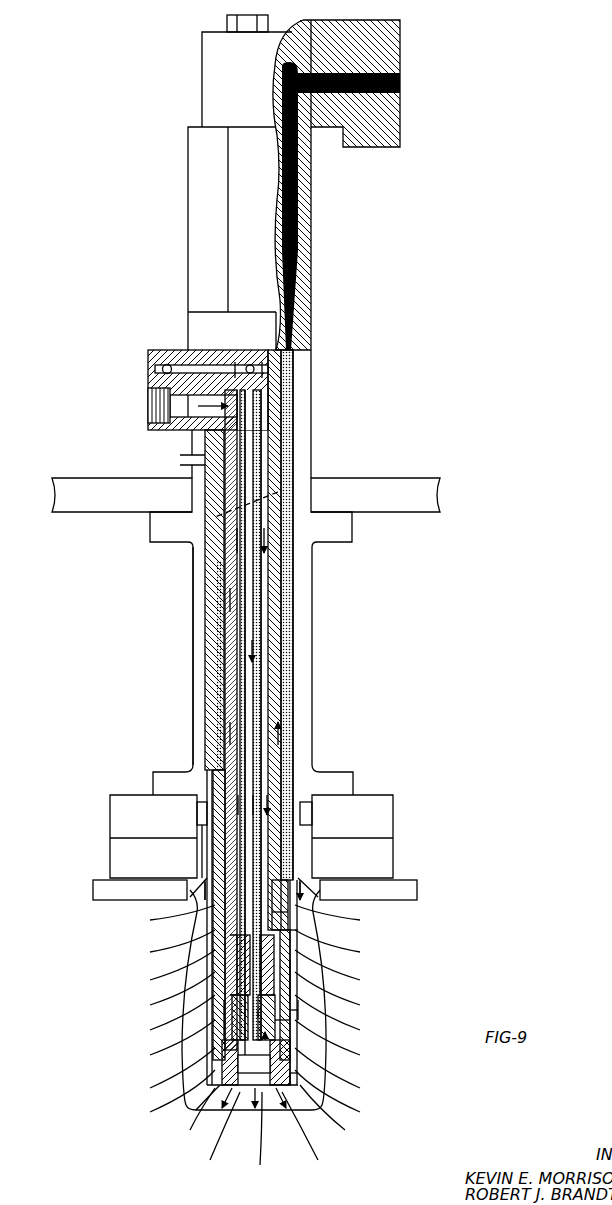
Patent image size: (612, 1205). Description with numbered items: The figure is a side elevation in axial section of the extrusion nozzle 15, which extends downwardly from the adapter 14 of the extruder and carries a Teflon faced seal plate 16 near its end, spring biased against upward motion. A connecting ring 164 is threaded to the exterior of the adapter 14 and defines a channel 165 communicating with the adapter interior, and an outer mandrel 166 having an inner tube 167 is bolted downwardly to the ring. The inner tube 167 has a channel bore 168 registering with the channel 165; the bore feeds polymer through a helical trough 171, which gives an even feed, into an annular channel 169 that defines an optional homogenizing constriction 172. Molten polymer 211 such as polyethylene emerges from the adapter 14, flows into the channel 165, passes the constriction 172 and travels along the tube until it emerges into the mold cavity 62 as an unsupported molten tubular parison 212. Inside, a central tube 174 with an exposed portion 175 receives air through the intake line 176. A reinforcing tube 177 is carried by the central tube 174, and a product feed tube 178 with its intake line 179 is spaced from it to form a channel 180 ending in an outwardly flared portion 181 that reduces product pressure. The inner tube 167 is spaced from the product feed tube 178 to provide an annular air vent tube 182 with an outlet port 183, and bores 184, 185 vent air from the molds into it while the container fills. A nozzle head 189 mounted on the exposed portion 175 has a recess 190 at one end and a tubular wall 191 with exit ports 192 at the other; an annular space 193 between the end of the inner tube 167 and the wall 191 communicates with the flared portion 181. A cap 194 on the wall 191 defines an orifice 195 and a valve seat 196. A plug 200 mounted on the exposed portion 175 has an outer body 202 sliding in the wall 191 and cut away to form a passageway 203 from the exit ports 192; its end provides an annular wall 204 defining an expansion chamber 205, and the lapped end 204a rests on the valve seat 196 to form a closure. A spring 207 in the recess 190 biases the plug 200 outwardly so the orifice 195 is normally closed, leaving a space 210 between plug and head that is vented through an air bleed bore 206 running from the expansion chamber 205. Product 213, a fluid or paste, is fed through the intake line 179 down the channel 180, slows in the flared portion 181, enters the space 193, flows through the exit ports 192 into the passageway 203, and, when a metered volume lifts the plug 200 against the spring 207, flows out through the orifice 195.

The adapter 14 is at (378, 150).
The extrusion nozzle 15 is at (314, 380).
The seal plate 16 is at (417, 893).
The mold cavity 62 is at (205, 920).
The connecting ring 164 is at (202, 88).
The channel 165 is at (296, 250).
The outer mandrel 166 is at (313, 417).
The inner tube 167 is at (294, 534).
The channel bore 168 is at (290, 456).
The annular channel 169 is at (205, 550).
The helical trough 171 is at (278, 492).
The homogenizing constriction 172 is at (294, 588).
The central tube 174 is at (252, 627).
The exposed portion 175 is at (220, 945).
The intake line 176 is at (88, 384).
The reinforcing tube 177 is at (262, 670).
The product feed tube 178 is at (230, 638).
The intake line 179 is at (148, 418).
The channel 180 is at (240, 658).
The outwardly flared portion 181 is at (275, 912).
The annular air vent tube 182 is at (225, 724).
The outlet port 183 is at (186, 460).
The bore 184 is at (293, 883).
The bore 185 is at (210, 880).
The nozzle head 189 is at (300, 1010).
The recess 190 is at (290, 975).
The tubular wall 191 is at (295, 1017).
The exit ports 192 is at (295, 1023).
The annular space 193 is at (235, 1018).
The cap 194 is at (230, 1085).
The orifice 195 is at (265, 1098).
The valve seat 196 is at (240, 1110).
The plug 200 is at (232, 1003).
The outer body 202 is at (230, 1025).
The passageway 203 is at (300, 1072).
The annular wall 204 is at (295, 1080).
The end of the annular wall 204a is at (290, 1082).
The expansion chamber 205 is at (225, 1135).
The air bleed bore 206 is at (240, 1035).
The spring 207 is at (240, 963).
The space 210 is at (240, 983).
The polymer 211 is at (400, 83).
The tubular parison 212 is at (295, 962).
The product 213 is at (142, 407).